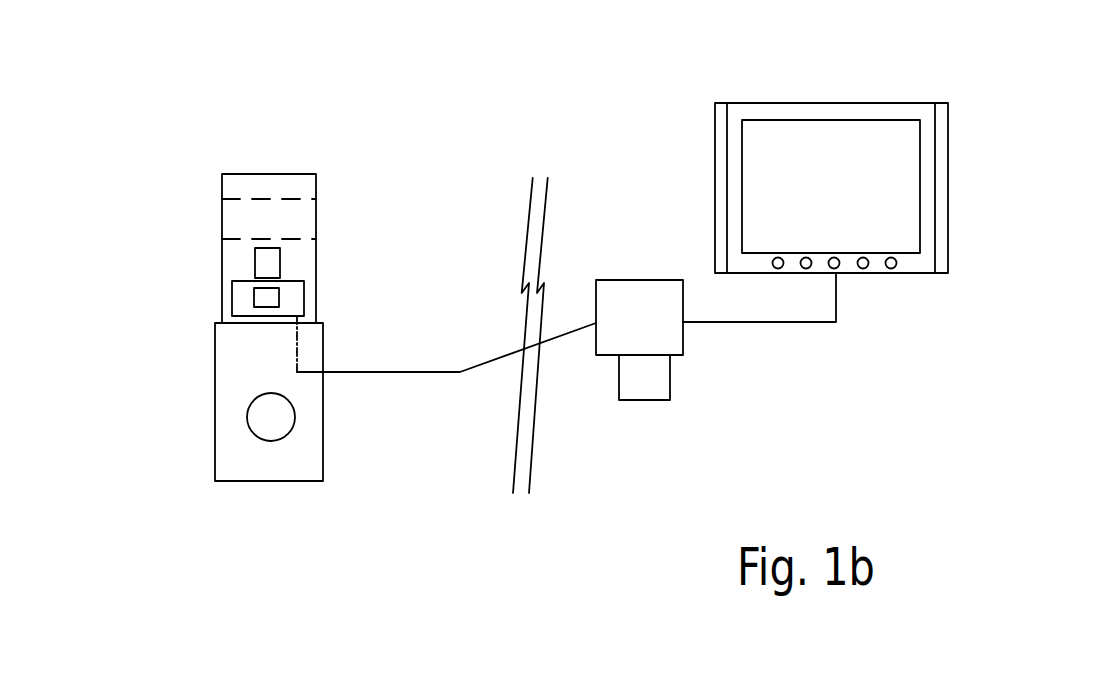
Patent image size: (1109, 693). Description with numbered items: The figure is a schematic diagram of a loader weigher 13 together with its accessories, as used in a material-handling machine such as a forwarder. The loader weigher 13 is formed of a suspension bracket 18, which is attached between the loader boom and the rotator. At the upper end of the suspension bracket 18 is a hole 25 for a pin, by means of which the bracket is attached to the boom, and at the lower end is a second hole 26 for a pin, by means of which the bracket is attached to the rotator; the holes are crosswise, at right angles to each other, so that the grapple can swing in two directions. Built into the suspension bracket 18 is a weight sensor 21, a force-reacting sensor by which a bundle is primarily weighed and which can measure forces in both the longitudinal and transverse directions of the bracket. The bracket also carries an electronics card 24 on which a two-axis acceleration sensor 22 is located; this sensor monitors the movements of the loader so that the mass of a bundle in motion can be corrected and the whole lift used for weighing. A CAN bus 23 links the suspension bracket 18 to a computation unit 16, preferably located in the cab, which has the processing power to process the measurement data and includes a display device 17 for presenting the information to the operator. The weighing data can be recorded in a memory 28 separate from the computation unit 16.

The loader weigher 13 is at (402, 168).
The hole 25 is at (262, 199).
The weight sensor 21 is at (270, 262).
The electronics card 24 is at (292, 303).
The two-axis acceleration sensor 22 is at (265, 297).
The suspension bracket 18 is at (230, 367).
The second hole 26 is at (288, 405).
The computation unit 16 is at (657, 329).
The memory 28 is at (628, 392).
The display device 17 is at (848, 204).
The CAN bus 23 is at (780, 323).